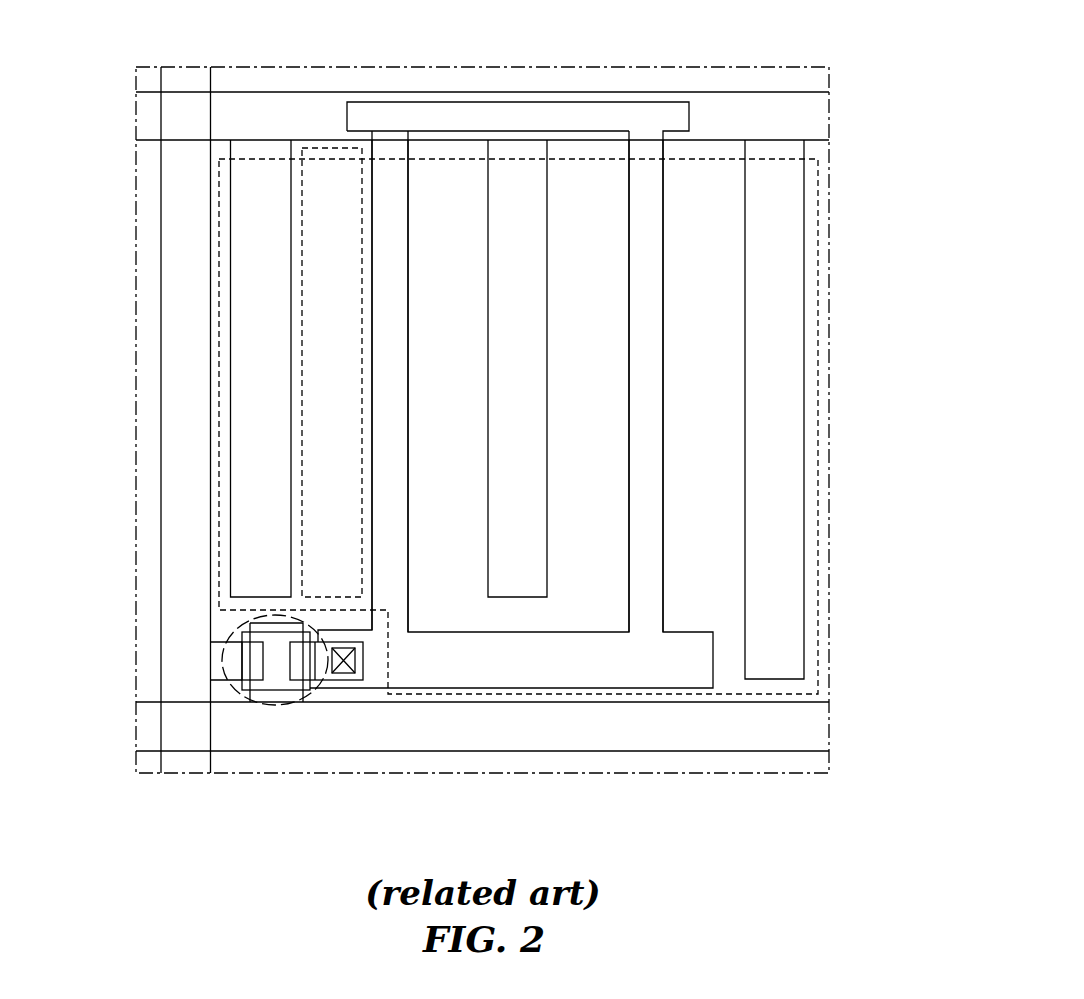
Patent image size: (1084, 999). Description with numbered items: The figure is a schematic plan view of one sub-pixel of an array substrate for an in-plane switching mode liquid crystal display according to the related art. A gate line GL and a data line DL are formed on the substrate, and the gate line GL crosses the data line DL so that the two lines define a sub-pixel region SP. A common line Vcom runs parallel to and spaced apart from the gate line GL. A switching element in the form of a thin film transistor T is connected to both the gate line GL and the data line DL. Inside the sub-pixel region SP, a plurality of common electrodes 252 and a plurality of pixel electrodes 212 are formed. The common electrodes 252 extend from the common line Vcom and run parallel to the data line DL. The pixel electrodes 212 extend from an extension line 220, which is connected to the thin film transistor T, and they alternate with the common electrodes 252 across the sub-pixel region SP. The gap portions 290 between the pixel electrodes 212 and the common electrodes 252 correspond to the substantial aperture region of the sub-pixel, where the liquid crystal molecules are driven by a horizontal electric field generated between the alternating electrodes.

The common electrodes 252 is at (262, 178).
The extension line 220 is at (583, 640).
The pixel electrodes 212 is at (392, 598).
The gap portions 290 is at (300, 243).
The common line Vcom is at (822, 112).
The gate line GL is at (518, 740).
The data line DL is at (176, 565).
The thin film transistor T is at (268, 707).
The sub-pixel region SP is at (738, 697).